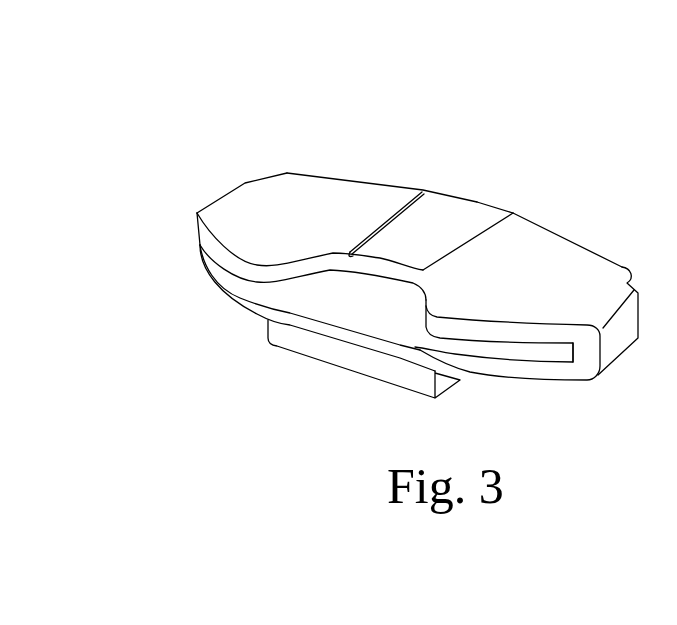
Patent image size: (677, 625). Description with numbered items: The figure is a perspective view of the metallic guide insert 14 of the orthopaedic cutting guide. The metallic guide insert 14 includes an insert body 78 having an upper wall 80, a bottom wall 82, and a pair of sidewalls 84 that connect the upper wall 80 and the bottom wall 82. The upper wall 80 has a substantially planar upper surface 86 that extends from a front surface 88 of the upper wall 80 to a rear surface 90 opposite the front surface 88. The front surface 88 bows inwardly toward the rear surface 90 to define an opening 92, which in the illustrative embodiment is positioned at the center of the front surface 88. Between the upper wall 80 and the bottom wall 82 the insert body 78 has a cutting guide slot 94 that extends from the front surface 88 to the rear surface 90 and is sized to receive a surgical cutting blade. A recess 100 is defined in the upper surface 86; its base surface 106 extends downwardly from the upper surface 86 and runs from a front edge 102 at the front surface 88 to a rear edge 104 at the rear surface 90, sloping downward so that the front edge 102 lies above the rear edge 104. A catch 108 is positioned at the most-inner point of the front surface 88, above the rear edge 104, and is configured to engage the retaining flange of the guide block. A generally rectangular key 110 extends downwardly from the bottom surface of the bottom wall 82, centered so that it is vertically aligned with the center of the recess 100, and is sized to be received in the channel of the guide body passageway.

The metallic guide insert 14 is at (586, 94).
The insert body 78 is at (285, 205).
The upper wall 80 is at (228, 265).
The bottom wall 82 is at (234, 292).
The sidewalls 84 is at (589, 347).
The upper surface 86 is at (232, 203).
The front surface 88 is at (523, 332).
The rear surface 90 is at (550, 229).
The opening 92 is at (364, 297).
The cutting guide slot 94 is at (493, 356).
The recess 100 is at (424, 231).
The front edge 102 is at (362, 258).
The rear edge 104 is at (480, 202).
The base surface 106 is at (461, 206).
The catch 108 is at (392, 262).
The key 110 is at (307, 349).